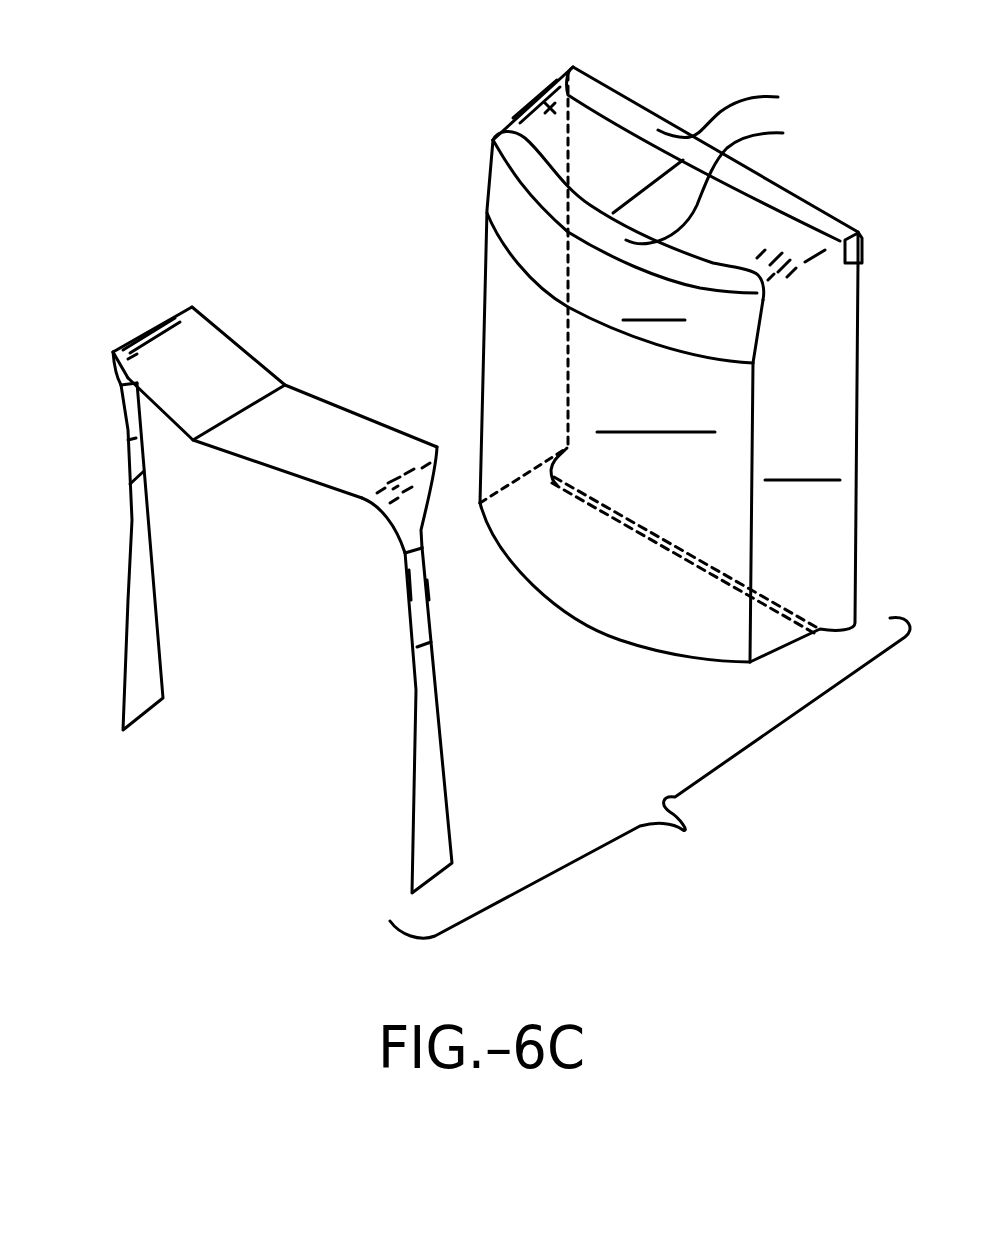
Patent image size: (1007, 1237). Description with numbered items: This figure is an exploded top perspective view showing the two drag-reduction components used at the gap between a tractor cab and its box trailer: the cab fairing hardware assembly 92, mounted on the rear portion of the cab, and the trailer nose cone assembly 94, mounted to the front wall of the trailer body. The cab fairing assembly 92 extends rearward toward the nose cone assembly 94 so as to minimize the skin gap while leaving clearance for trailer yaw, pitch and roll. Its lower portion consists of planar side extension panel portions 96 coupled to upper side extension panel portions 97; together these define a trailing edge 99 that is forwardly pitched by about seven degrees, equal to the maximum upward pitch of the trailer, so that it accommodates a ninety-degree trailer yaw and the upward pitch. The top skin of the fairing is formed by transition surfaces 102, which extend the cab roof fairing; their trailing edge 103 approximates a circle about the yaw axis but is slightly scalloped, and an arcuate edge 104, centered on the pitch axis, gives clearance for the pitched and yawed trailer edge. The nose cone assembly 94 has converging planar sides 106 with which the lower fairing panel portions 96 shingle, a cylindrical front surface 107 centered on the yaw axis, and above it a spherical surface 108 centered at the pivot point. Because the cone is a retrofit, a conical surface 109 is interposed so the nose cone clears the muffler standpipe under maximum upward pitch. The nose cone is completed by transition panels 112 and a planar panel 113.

The cab fairing hardware assembly 92 is at (138, 305).
The trailer nose cone assembly 94 is at (448, 230).
The side extension panel portions 96 is at (143, 660).
The upper side extension panel portions 97 is at (131, 450).
The trailing edge 99 is at (140, 446).
The transition surfaces 102 is at (190, 358).
The trailing edge 103 is at (258, 358).
The arcuate edge 104 is at (433, 480).
The converging planar sides 106 is at (825, 520).
The cylindrical front surface 107 is at (650, 610).
The spherical surface 108 is at (522, 173).
The conical surface 109 is at (738, 322).
The transition panels 112 is at (540, 102).
The planar panel 113 is at (605, 96).